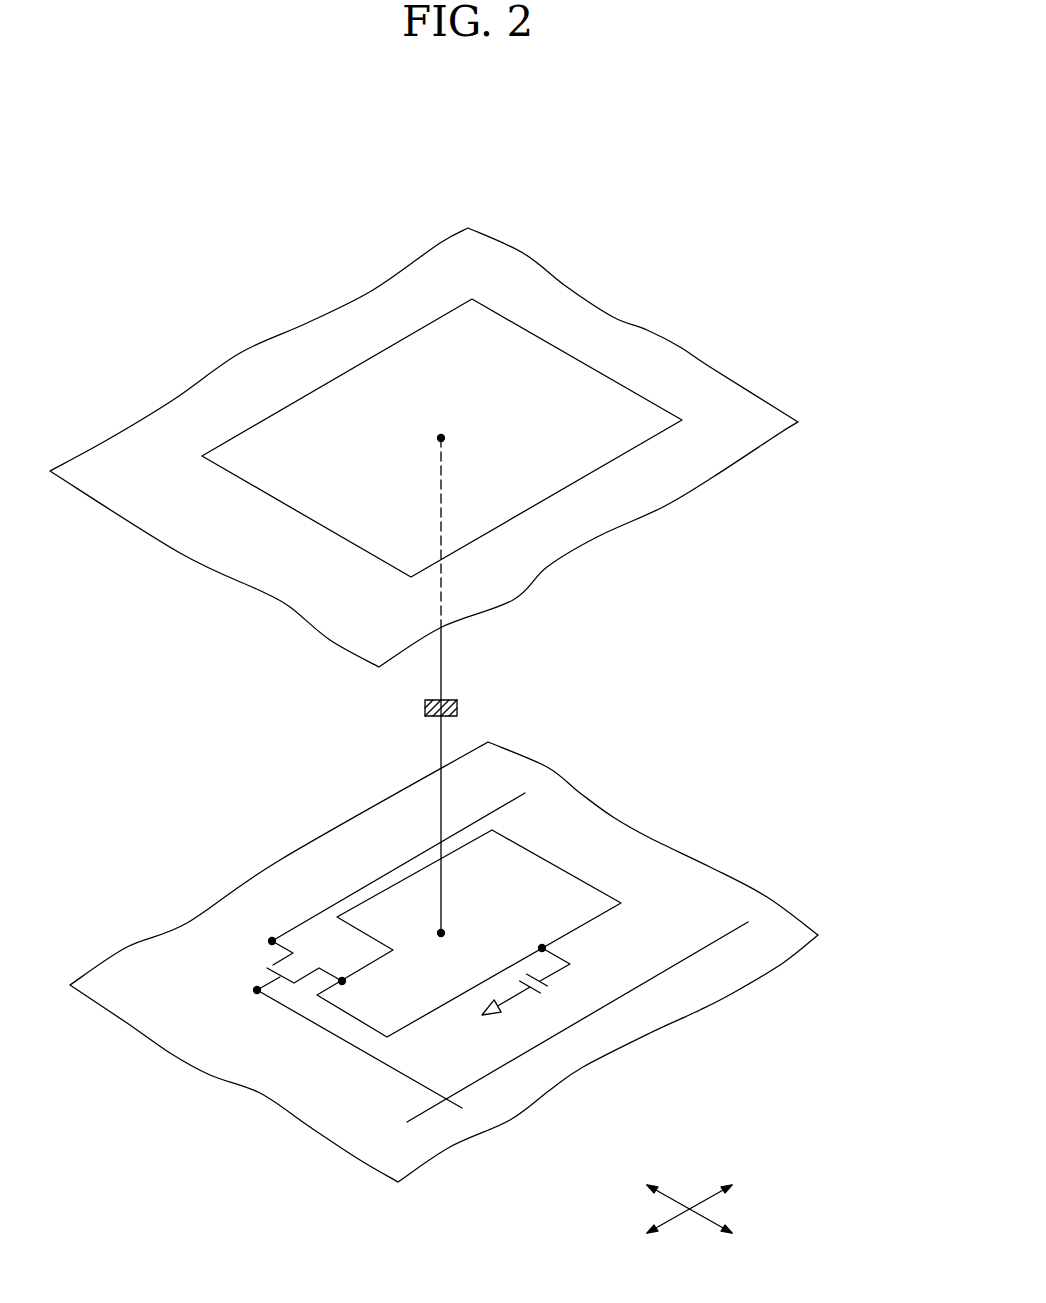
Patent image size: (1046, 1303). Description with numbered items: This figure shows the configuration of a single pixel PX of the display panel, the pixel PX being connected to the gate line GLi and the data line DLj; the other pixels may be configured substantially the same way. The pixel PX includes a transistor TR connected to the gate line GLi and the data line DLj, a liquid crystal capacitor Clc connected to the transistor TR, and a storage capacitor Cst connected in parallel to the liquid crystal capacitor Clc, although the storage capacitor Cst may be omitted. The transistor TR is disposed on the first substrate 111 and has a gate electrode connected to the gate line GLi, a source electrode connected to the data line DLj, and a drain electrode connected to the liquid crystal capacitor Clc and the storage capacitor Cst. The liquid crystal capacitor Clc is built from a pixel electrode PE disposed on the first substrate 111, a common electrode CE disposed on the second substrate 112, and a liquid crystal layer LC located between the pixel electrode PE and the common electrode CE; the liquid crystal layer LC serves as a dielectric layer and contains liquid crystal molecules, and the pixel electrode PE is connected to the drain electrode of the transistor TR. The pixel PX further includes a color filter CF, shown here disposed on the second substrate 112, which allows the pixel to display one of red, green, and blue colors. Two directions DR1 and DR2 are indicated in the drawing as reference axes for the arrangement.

The second substrate 112 is at (547, 272).
The color filter CF is at (597, 367).
The common electrode CE is at (705, 390).
The pixel PX is at (713, 200).
The liquid crystal capacitor Clc is at (459, 686).
The liquid crystal layer LC is at (613, 702).
The pixel electrode PE is at (557, 860).
The first substrate 111 is at (712, 865).
The gate line GLi is at (272, 941).
The transistor TR is at (301, 964).
The data line DLj is at (257, 990).
The storage capacitor Cst is at (533, 980).
The first direction DR1 is at (713, 1215).
The second direction DR2 is at (713, 1203).